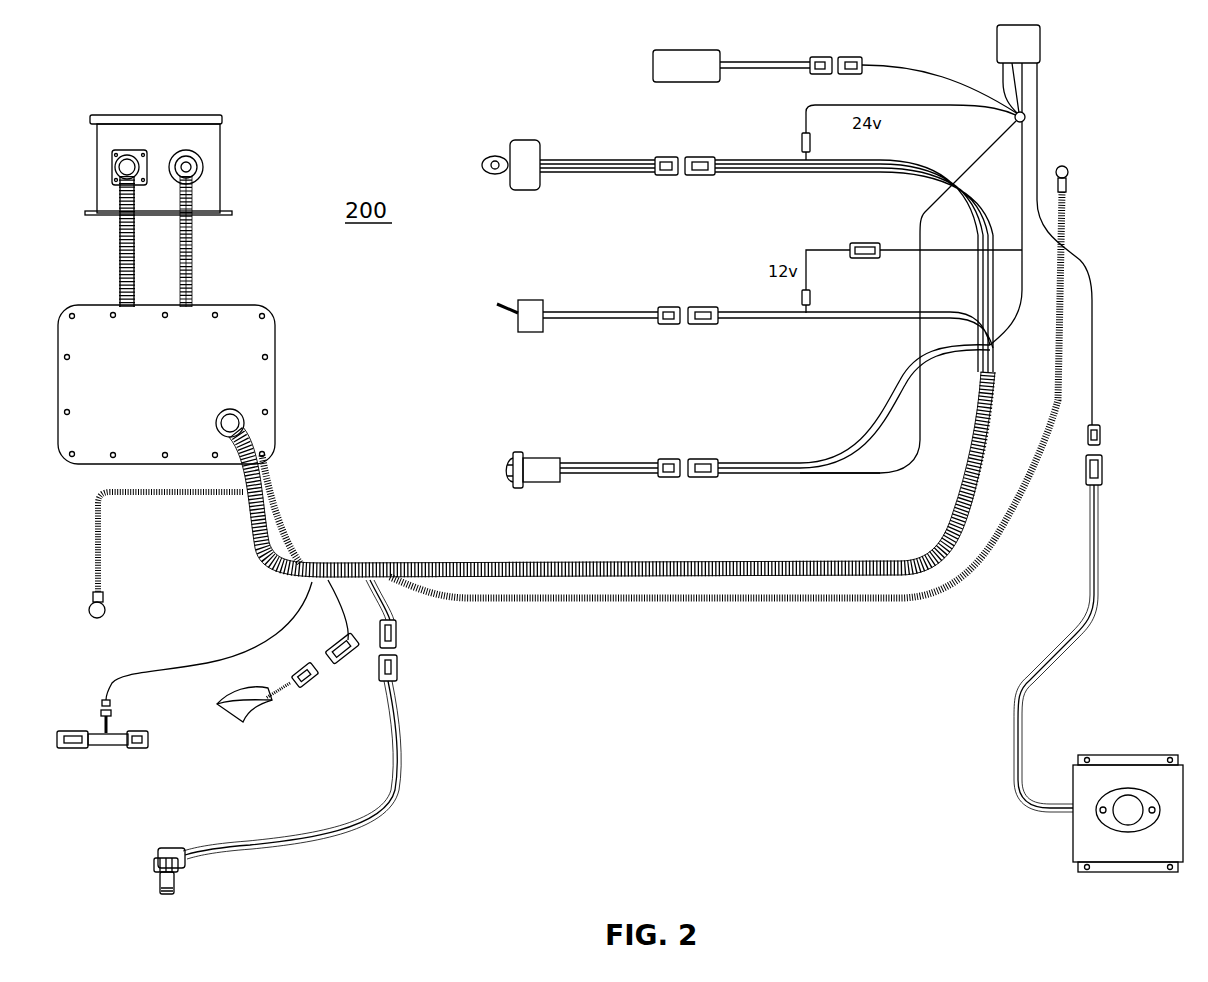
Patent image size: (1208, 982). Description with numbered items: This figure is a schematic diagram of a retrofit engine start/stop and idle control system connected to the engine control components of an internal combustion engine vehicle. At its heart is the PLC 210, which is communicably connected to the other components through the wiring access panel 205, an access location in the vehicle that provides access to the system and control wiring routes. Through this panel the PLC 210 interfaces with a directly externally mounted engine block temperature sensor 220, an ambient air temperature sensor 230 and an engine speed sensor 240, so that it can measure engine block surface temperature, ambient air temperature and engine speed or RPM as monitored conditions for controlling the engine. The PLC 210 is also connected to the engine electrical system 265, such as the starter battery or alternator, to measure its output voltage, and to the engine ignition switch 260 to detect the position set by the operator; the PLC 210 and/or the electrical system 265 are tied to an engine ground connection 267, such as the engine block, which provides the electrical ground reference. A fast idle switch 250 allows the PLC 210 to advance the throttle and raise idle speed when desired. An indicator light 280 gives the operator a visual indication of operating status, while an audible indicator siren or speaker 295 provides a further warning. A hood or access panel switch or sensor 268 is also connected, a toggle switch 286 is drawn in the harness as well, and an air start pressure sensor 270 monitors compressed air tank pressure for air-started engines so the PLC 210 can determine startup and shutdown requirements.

The wiring access panel 205 is at (178, 418).
The PLC 210 is at (204, 115).
The engine block temperature sensor 220 is at (103, 615).
The ambient air temperature sensor 230 is at (1069, 172).
The engine speed sensor 240 is at (107, 745).
The fast idle switch 250 is at (653, 63).
The engine ignition switch 260 is at (520, 140).
The engine electrical system 265 is at (1042, 47).
The engine ground connection 267 is at (1026, 116).
The hood or access panel switch or sensor 268 is at (230, 720).
The air start pressure sensor 270 is at (180, 878).
The indicator light 280 is at (515, 455).
The toggle switch 286 is at (524, 300).
The audible indicator siren or speaker 295 is at (1128, 753).